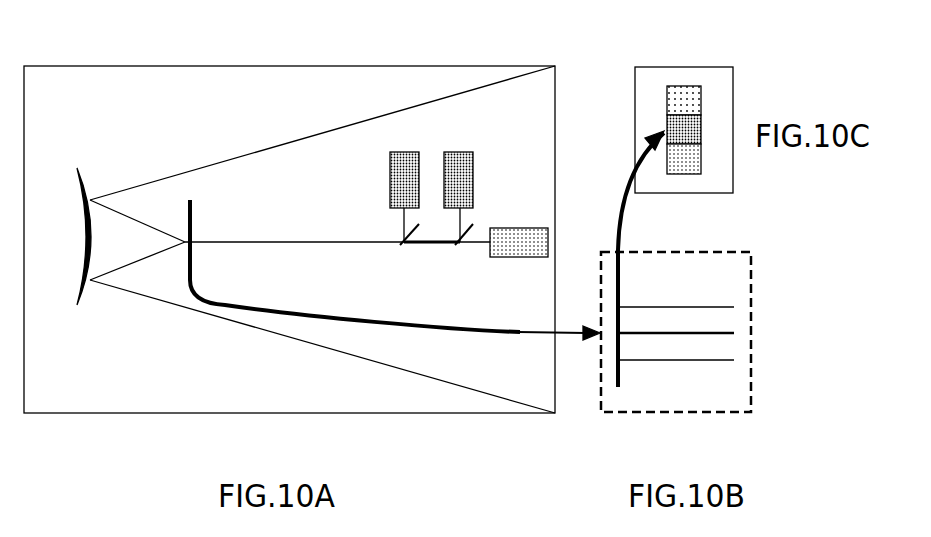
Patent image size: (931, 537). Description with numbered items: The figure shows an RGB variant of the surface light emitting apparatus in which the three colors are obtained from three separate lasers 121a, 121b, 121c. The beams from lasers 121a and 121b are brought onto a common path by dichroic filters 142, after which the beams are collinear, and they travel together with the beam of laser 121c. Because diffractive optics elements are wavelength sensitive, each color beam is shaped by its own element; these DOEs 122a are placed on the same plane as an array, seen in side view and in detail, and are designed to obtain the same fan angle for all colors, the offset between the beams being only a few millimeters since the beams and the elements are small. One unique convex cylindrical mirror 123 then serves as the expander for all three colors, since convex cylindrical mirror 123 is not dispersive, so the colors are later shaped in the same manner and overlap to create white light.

In FIG. 10A, the convex cylindrical mirror 123 is at (77, 170).
In FIG. 10A, the DOE array 122a is at (193, 228).
In FIG. 10B, the DOE array 122a is at (620, 387).
In FIG. 10C, the DOE array 122a is at (682, 64).
In FIG. 10A, the laser 121a is at (396, 152).
In FIG. 10A, the laser 121b is at (473, 170).
In FIG. 10A, the laser 121c is at (526, 217).
In FIG. 10A, the dichroic filter 142 is at (392, 258).